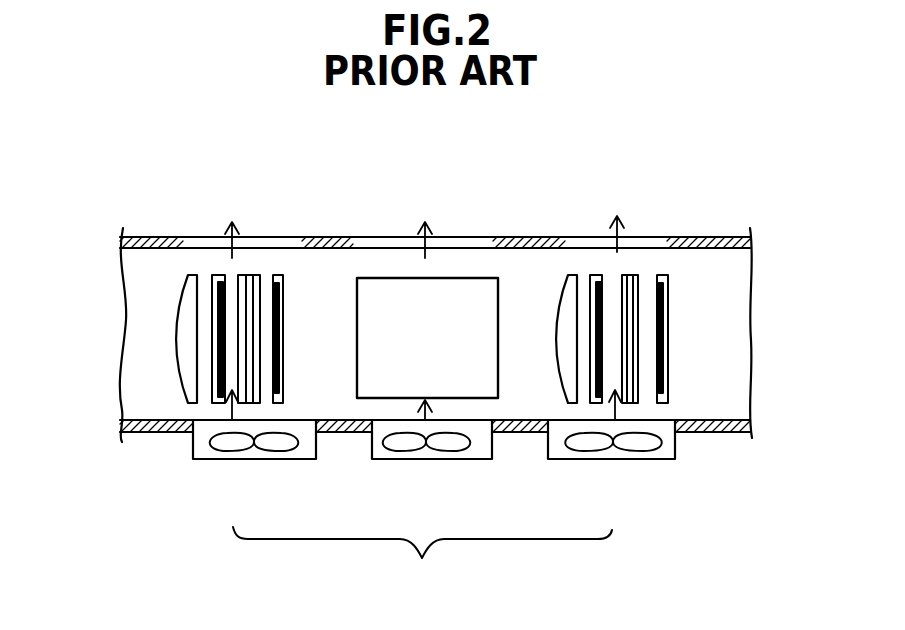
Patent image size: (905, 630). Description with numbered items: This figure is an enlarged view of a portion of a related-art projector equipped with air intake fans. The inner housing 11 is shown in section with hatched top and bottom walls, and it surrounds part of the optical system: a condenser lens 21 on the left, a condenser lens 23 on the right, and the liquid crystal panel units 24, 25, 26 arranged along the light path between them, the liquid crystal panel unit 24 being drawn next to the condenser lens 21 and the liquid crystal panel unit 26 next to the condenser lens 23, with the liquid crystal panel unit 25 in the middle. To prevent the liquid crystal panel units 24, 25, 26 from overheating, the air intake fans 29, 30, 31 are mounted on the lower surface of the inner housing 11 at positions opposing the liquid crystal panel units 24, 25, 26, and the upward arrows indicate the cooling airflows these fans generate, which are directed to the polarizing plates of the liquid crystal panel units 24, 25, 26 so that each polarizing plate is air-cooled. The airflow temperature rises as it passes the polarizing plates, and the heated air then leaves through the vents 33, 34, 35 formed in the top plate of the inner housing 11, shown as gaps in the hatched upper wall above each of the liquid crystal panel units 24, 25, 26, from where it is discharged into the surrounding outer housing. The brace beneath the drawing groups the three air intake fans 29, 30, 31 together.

The inner housing 11 is at (719, 446).
The condenser lens 21 is at (178, 325).
The condenser lens 23 is at (562, 337).
The liquid crystal panel unit 24 is at (292, 275).
The liquid crystal panel unit 25 is at (473, 266).
The liquid crystal panel unit 26 is at (677, 274).
The air intake fan 29 is at (253, 460).
The air intake fan 30 is at (437, 460).
The air intake fan 31 is at (600, 460).
The vent 33 is at (272, 243).
The vent 34 is at (457, 243).
The vent 35 is at (640, 243).